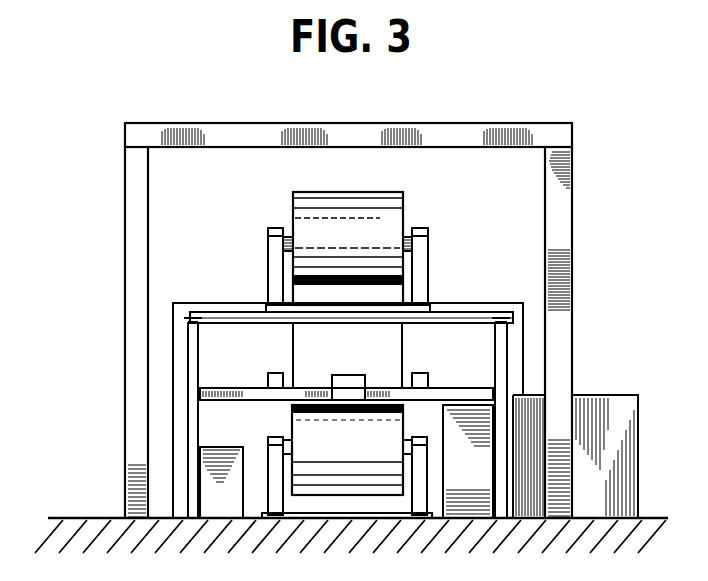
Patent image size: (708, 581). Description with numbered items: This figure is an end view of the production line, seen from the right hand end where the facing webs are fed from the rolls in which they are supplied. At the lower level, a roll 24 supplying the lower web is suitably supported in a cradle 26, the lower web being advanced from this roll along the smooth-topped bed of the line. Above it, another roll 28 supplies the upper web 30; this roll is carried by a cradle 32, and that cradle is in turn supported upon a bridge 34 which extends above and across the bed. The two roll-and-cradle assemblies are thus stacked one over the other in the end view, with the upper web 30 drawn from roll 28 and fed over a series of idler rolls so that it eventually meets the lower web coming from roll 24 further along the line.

The roll 24 is at (364, 458).
The cradle 26 is at (420, 475).
The roll 28 is at (368, 204).
The upper web 30 is at (378, 354).
The cradle 32 is at (420, 255).
The bridge 34 is at (253, 332).